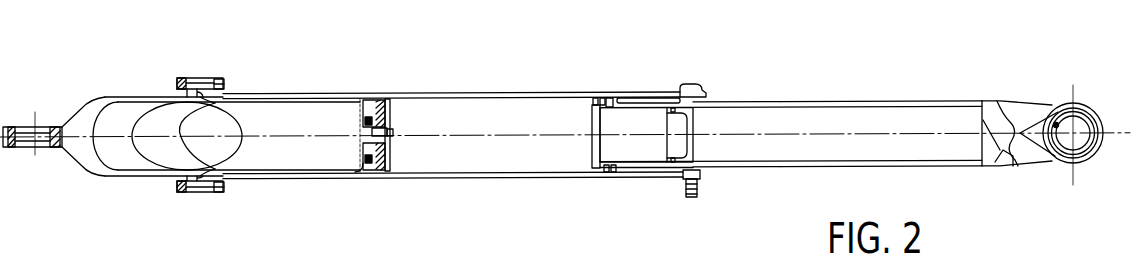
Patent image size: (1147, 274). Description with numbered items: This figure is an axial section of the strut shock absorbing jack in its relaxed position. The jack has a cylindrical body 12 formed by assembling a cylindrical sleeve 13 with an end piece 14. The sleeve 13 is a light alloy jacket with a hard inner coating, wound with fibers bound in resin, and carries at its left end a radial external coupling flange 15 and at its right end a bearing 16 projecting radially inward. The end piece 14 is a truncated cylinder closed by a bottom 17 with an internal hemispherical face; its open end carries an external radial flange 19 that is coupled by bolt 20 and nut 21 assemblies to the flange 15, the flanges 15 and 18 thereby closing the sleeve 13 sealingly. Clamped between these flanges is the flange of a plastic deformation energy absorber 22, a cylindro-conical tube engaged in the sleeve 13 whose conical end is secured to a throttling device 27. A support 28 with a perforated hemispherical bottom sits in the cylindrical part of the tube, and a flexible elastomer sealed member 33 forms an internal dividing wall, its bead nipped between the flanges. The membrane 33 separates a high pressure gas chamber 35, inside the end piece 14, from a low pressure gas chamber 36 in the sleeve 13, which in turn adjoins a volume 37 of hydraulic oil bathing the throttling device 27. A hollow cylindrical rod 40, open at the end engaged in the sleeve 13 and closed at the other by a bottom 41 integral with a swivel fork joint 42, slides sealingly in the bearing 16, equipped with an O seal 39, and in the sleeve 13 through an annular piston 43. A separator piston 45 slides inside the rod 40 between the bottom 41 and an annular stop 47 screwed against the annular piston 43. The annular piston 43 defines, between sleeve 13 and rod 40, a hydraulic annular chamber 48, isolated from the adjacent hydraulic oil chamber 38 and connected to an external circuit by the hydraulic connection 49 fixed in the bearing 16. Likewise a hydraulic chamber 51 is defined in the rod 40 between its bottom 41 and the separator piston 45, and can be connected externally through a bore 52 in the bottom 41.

The cylindrical body 12 is at (432, 182).
The cylindrical sleeve 13 is at (488, 177).
The end piece 14 is at (106, 176).
The radial external coupling flange 15 is at (208, 193).
The bearing 16 is at (690, 90).
The bottom 17 is at (82, 148).
The flange 18 is at (183, 193).
The external radial flange 19 is at (44, 126).
The bolt 20 is at (185, 78).
The nut 21 is at (220, 78).
The plastic deformation energy absorber 22 is at (311, 172).
The throttling device 27 is at (400, 110).
The support 28 is at (246, 131).
The sealed member (membrane) 33 is at (234, 144).
The high pressure gas chamber 35 is at (128, 148).
The low pressure gas chamber 36 is at (339, 129).
The volume of hydraulic oil 37 is at (363, 118).
The hydraulic oil chamber 38 is at (489, 113).
The O seal 39 is at (702, 97).
The hollow cylindrical rod 40 is at (892, 100).
The bottom 41 is at (993, 112).
The swivel fork joint 42 is at (1085, 112).
The annular piston 43 is at (610, 177).
The separator piston 45 is at (690, 143).
The annular stop 47 is at (592, 103).
The hydraulic annular chamber 48 is at (645, 100).
The hydraulic connection 49 is at (700, 178).
The hydraulic chamber 51 is at (795, 144).
The bore 52 is at (995, 155).